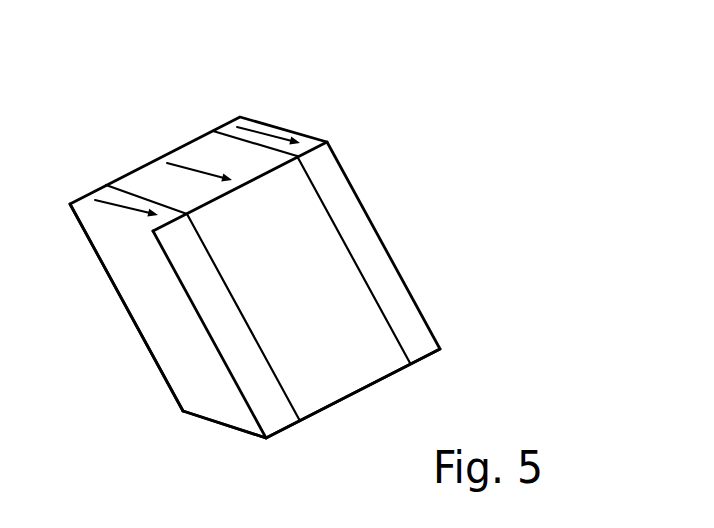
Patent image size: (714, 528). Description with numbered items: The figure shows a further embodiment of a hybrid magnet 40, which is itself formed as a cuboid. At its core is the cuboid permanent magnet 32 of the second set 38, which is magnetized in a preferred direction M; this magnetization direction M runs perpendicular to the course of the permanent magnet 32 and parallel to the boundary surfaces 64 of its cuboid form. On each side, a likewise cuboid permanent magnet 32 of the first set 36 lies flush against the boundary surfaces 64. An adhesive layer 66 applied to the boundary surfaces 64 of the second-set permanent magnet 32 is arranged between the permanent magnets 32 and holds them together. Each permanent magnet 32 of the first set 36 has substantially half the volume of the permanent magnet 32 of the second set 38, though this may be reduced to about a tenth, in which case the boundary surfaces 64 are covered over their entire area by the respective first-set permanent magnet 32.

The permanent magnet 32 is at (215, 405).
The first set 36 is at (120, 243).
The second set 38 is at (318, 393).
The hybrid magnet 40 is at (507, 144).
The boundary surfaces 64 is at (327, 210).
The adhesive layer 66 is at (237, 303).
The magnetization direction M is at (120, 216).